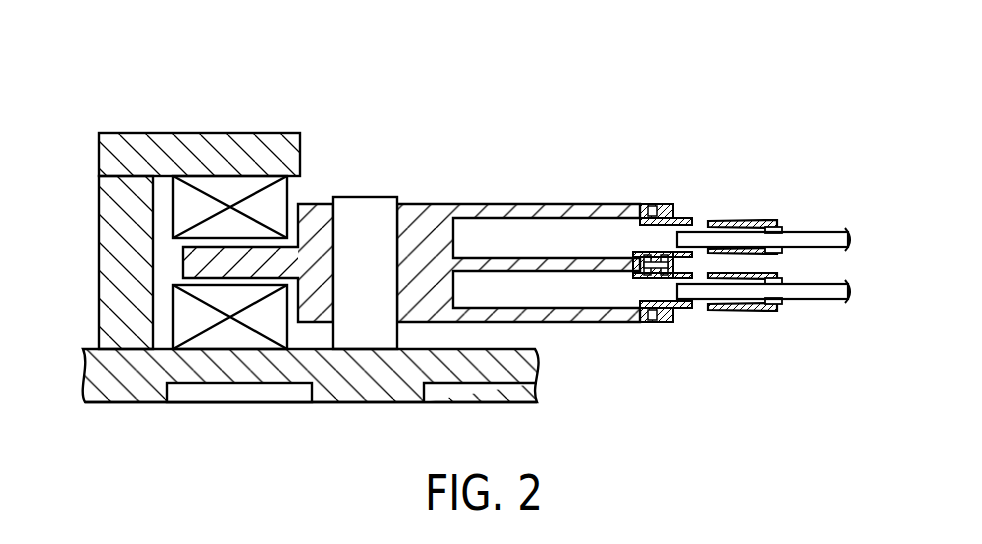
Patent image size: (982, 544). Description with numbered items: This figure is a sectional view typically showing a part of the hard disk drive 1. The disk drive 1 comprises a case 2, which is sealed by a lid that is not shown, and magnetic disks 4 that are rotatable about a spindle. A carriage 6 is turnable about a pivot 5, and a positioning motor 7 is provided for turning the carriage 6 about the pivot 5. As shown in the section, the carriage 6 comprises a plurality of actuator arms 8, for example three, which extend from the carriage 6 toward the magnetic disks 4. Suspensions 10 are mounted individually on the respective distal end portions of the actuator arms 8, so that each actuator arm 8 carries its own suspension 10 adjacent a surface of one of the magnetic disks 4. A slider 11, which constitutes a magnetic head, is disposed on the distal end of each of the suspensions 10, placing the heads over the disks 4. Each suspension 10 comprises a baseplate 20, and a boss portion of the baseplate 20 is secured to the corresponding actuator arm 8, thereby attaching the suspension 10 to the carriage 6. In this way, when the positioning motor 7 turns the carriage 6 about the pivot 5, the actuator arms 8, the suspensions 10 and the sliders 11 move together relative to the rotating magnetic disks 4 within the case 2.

The disk drive 1 is at (247, 93).
The case 2 is at (137, 402).
The magnetic disks 4 is at (832, 232).
The pivot 5 is at (366, 205).
The carriage 6 is at (506, 205).
The positioning motor 7 is at (229, 337).
The actuator arms 8 is at (596, 205).
The suspensions 10 is at (757, 307).
The slider 11 is at (782, 228).
The baseplate 20 is at (677, 216).